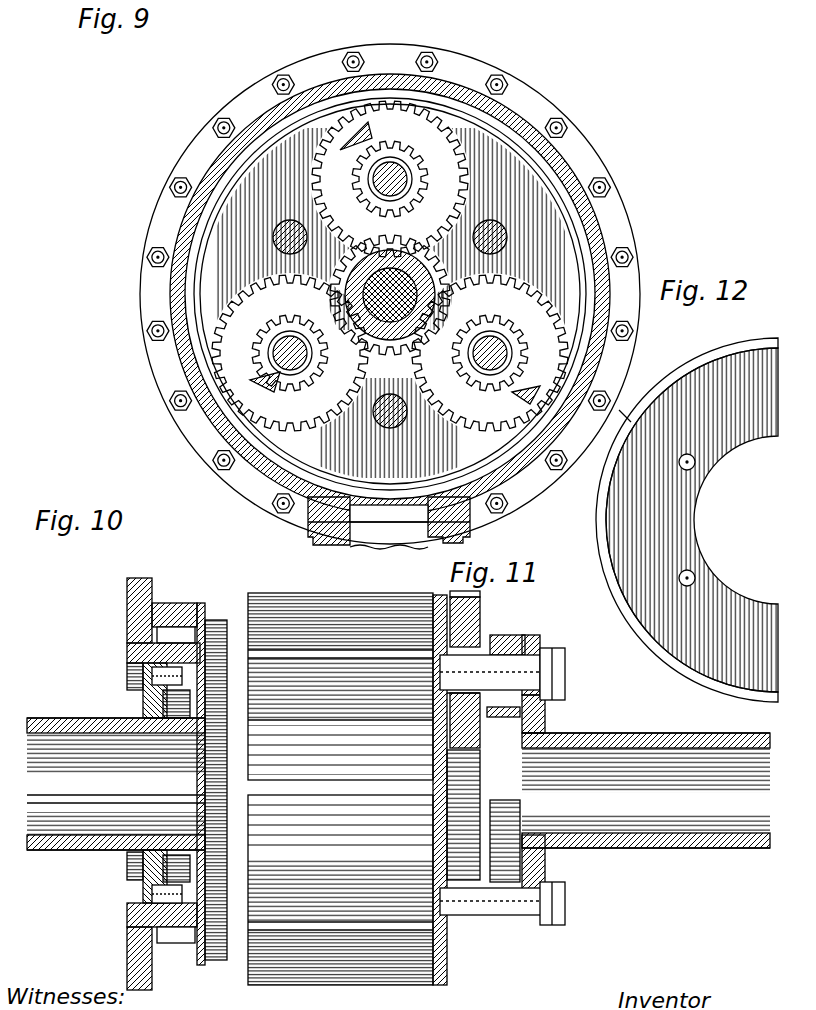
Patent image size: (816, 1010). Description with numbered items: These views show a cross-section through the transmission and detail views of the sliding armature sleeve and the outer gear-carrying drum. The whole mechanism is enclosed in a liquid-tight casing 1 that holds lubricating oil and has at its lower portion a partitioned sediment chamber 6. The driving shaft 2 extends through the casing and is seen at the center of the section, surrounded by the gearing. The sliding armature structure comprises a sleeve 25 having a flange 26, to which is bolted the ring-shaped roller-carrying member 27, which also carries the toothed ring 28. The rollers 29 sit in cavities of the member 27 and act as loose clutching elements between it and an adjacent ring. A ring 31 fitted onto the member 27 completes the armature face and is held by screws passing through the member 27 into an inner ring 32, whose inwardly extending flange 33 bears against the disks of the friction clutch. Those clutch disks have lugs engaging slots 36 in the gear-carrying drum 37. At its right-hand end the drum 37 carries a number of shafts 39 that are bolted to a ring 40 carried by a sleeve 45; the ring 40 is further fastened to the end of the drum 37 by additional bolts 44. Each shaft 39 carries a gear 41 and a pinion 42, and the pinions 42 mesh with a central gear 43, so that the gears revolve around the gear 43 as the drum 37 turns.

In FIG. 9, the casing 1 is at (595, 214).
In FIG. 9, the driving shaft 2 is at (390, 298).
In FIG. 9, the partitioned sediment chamber 6 is at (362, 548).
In FIG. 10, the sleeve 25 is at (96, 720).
In FIG. 10, the flange 26 is at (148, 848).
In FIG. 10, the ring-shaped roller-carrying member 27 is at (180, 628).
In FIG. 10, the toothed ring 28 is at (126, 666).
In FIG. 10, the rollers 29 is at (175, 628).
In FIG. 10, the ring 31 is at (127, 602).
In FIG. 10, the inner ring 32 is at (216, 680).
In FIG. 10, the inwardly extending flange 33 is at (204, 612).
In FIG. 12, the slots 36 is at (624, 414).
In FIG. 10, the slots 36 is at (318, 594).
In FIG. 9, the gear-carrying drum 37 is at (390, 303).
In FIG. 12, the gear-carrying drum 37 is at (714, 352).
In FIG. 11, the gear-carrying drum 37 is at (438, 596).
In FIG. 9, the shafts 39 is at (412, 176).
In FIG. 11, the shafts 39 is at (466, 644).
In FIG. 9, the ring 40 is at (534, 298).
In FIG. 11, the ring 40 is at (548, 650).
In FIG. 9, the gear 41 is at (535, 330).
In FIG. 11, the gear 41 is at (472, 600).
In FIG. 9, the pinion 42 is at (395, 268).
In FIG. 11, the pinion 42 is at (520, 640).
In FIG. 9, the gear 43 is at (498, 262).
In FIG. 9, the additional bolts 44 is at (284, 222).
In FIG. 11, the additional bolts 44 is at (478, 920).
In FIG. 11, the sleeve 45 is at (642, 734).